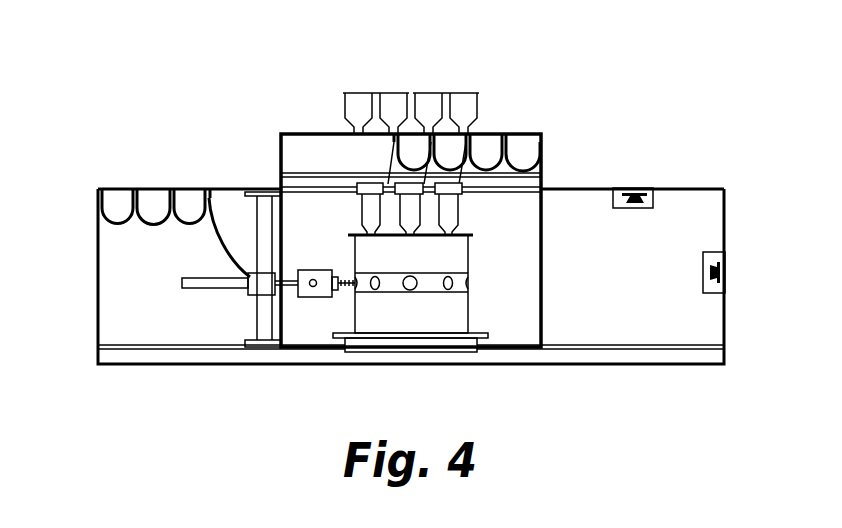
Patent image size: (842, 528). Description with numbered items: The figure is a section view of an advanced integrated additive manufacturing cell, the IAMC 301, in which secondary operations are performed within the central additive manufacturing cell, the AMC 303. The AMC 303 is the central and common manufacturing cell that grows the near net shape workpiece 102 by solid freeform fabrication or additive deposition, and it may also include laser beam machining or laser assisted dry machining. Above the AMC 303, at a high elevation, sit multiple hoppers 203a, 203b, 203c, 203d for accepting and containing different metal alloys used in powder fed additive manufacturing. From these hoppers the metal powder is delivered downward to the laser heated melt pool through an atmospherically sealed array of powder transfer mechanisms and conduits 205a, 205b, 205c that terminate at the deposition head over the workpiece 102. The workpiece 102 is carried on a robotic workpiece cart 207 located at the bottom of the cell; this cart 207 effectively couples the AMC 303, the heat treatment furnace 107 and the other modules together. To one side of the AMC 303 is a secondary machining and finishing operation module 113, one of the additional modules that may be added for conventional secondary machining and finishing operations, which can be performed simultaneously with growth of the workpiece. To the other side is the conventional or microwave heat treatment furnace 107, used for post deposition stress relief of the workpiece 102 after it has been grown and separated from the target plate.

The advanced IAMC 301 is at (185, 73).
The hopper 203a is at (357, 92).
The hopper 203b is at (395, 92).
The hopper 203c is at (427, 92).
The hopper 203d is at (463, 92).
The powder transfer mechanism and conduit 205a is at (362, 207).
The powder transfer mechanism and conduit 205b is at (398, 205).
The powder transfer mechanism and conduit 205c is at (460, 203).
The AMC 303 is at (508, 133).
The secondary machining and finishing operation module 113 is at (168, 325).
The heat treatment furnace 107 is at (680, 330).
The workpiece 102 is at (430, 325).
The robotic workpiece cart 207 is at (413, 342).